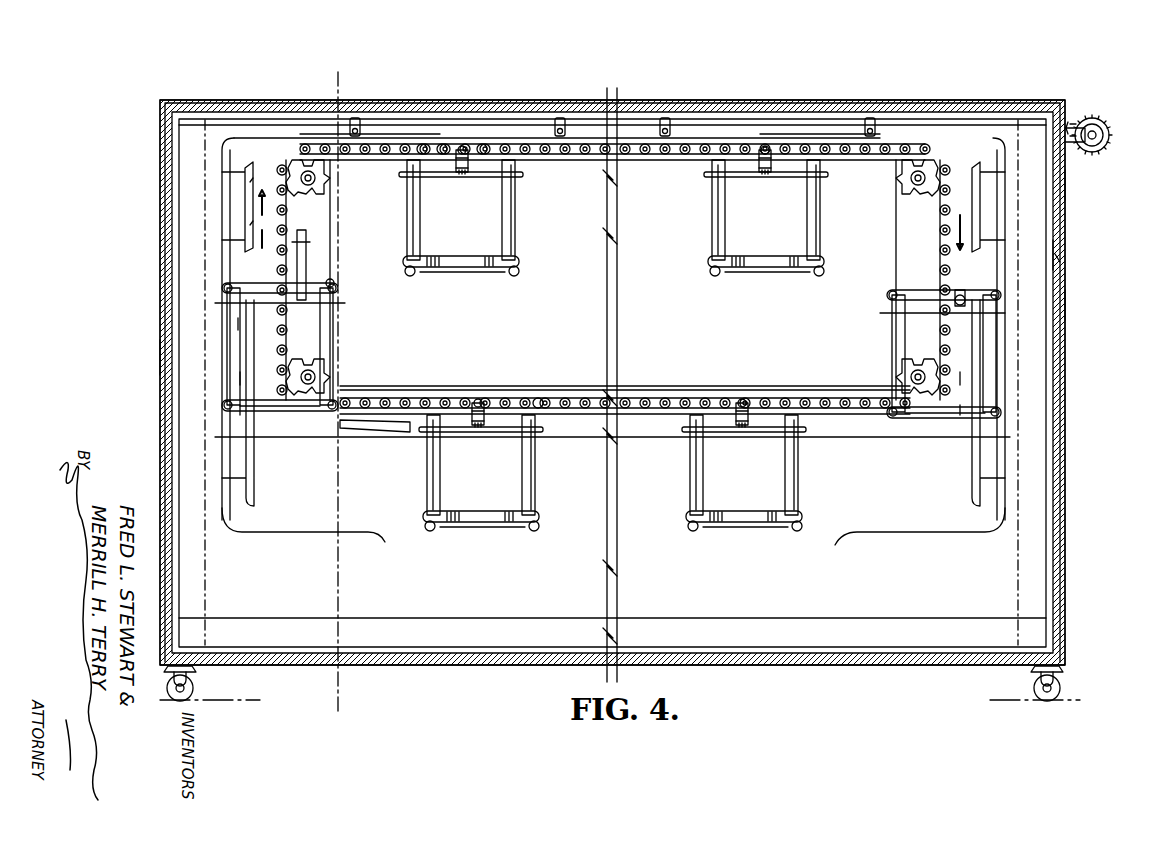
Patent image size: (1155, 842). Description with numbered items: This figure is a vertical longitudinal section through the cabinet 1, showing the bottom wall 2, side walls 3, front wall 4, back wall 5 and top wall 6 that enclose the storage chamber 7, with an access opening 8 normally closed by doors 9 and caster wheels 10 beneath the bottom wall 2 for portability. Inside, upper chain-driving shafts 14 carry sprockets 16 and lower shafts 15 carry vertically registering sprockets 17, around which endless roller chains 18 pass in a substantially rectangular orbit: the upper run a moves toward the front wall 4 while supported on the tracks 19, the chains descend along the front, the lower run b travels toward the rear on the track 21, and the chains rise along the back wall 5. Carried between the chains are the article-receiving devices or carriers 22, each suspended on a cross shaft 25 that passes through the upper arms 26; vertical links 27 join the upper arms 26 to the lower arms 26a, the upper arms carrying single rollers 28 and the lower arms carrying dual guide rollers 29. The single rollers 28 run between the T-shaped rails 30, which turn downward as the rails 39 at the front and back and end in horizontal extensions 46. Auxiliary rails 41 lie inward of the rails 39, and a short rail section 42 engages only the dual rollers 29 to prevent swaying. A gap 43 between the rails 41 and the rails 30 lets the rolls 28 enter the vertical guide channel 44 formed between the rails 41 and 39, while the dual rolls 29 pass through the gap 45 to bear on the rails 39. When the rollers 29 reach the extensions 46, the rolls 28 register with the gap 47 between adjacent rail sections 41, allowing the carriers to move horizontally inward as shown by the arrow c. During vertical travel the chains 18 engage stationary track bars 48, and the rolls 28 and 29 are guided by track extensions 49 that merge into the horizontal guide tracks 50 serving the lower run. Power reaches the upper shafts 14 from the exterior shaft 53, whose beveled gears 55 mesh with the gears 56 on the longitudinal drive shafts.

The cabinet 1 is at (423, 92).
The bottom wall 2 is at (466, 664).
The side walls 3 is at (392, 612).
The front wall 4 is at (1064, 188).
The back wall 5 is at (338, 72).
The top wall 6 is at (666, 122).
The storage chamber 7 is at (563, 323).
The access opening 8 is at (1048, 258).
The doors 9 is at (163, 357).
The caster wheels 10 is at (186, 676).
The chain-driving shafts 14 is at (312, 179).
The lower shafts 15 is at (310, 377).
The sprockets 16 is at (322, 196).
The sprockets 17 is at (312, 348).
The endless roller chains 18 is at (576, 156).
The guiding and supporting tracks 19 is at (684, 160).
The track 21 is at (392, 432).
The article-receiving devices 22 is at (530, 230).
The cross shaft 25 is at (465, 146).
The upper arms 26 is at (484, 146).
The lower arms 26a is at (470, 258).
The vertical links 27 is at (418, 198).
The single rollers 28 is at (424, 147).
The dual guide rollers 29 is at (416, 276).
The T-shaped rails 30 is at (298, 137).
The downwardly extending rails 39 is at (218, 268).
The auxiliary rails 41 is at (247, 198).
The rail section 42 is at (236, 408).
The gap 43 is at (170, 160).
The guide channel 44 is at (230, 216).
The gap 45 is at (237, 303).
The horizontal extensions 46 is at (302, 532).
The gap 47 is at (245, 394).
The track bars 48 is at (300, 255).
The track extensions 49 is at (342, 303).
The horizontal guide tracks 50 is at (503, 390).
The shaft 53 is at (1106, 128).
The beveled gears 55 is at (1094, 130).
The gears 56 is at (1072, 122).
The upper run a is at (626, 152).
The lower run b is at (655, 400).
The arrow c is at (375, 501).